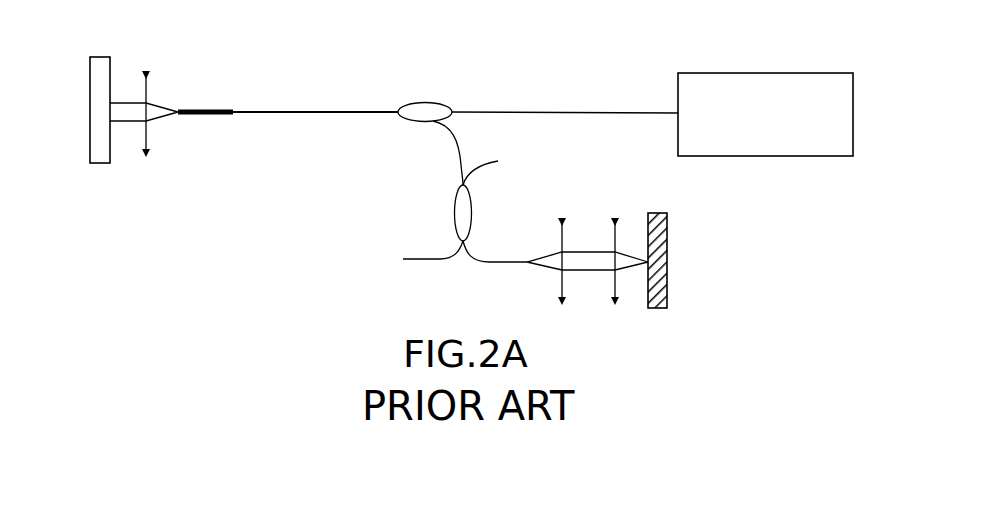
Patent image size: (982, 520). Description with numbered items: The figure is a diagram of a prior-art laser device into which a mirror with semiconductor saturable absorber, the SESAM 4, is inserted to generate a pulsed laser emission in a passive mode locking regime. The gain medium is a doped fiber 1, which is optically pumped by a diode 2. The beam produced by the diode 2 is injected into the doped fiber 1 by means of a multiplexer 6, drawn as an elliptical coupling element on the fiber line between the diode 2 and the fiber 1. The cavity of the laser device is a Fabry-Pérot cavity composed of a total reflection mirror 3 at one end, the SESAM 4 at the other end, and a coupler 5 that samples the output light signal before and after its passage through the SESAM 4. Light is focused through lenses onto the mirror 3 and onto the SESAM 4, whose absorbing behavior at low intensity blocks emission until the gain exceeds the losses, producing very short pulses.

The doped fiber 1 is at (316, 110).
The diode 2 is at (765, 73).
The total reflection mirror 3 is at (90, 110).
The SESAM 4 is at (667, 262).
The coupler 5 is at (454, 214).
The multiplexer 6 is at (432, 102).